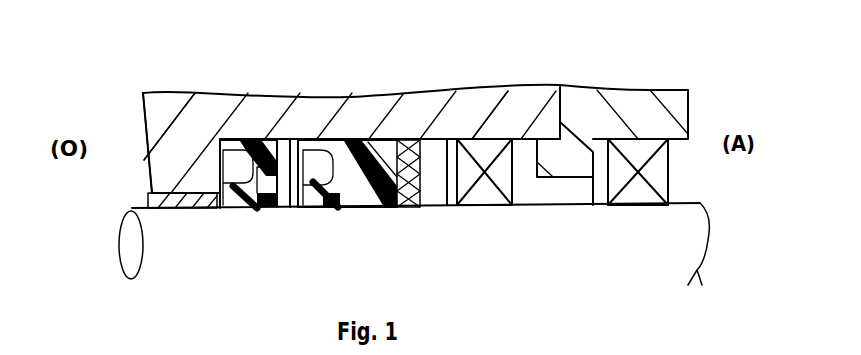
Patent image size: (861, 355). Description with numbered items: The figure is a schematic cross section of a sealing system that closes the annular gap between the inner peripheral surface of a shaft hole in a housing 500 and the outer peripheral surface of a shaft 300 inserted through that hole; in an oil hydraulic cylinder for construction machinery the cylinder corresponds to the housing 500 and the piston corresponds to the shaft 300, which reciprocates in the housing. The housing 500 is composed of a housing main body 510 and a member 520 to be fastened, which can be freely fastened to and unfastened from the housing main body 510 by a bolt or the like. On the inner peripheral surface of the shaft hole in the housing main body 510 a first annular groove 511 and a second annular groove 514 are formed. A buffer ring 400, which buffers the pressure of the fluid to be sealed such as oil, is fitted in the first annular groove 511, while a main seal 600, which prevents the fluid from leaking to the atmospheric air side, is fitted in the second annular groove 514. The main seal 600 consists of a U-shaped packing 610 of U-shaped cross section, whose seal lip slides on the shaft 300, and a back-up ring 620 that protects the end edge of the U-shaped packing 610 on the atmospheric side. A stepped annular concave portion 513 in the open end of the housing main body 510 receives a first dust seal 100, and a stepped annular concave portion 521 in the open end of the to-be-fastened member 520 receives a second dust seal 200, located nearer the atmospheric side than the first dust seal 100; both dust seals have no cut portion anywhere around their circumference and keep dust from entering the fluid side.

The first dust seal 100 is at (490, 203).
The second dust seal 200 is at (640, 203).
The shaft 300 is at (157, 253).
The buffer ring 400 is at (248, 212).
The housing 500 is at (134, 177).
The housing main body 510 is at (380, 81).
The first annular groove 511 is at (190, 97).
The annular concave portion 513 is at (445, 97).
The second annular groove 514 is at (273, 97).
The member to be fastened 520 is at (650, 76).
The annular concave portion 521 is at (593, 95).
The main seal 600 is at (365, 212).
The U-shaped packing 610 is at (372, 195).
The back-up ring 620 is at (417, 195).